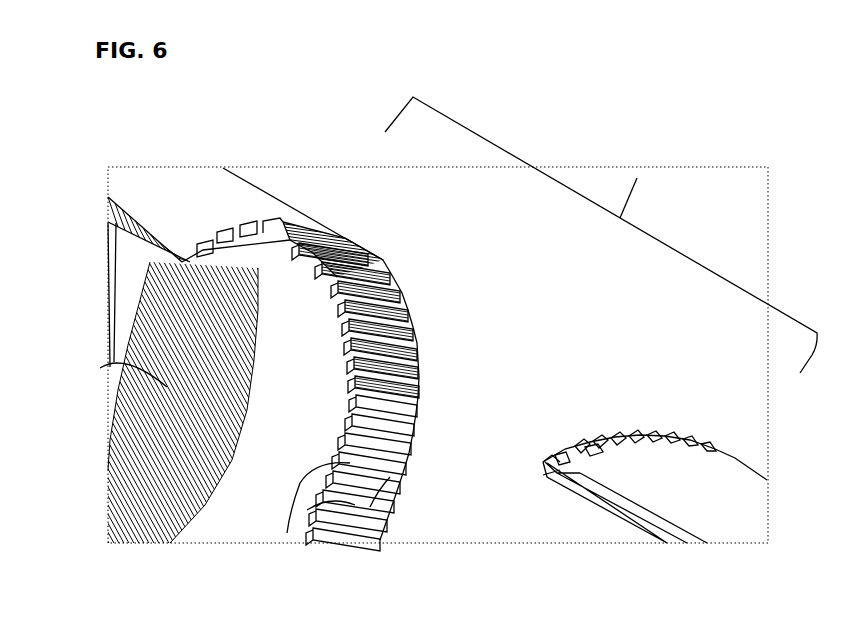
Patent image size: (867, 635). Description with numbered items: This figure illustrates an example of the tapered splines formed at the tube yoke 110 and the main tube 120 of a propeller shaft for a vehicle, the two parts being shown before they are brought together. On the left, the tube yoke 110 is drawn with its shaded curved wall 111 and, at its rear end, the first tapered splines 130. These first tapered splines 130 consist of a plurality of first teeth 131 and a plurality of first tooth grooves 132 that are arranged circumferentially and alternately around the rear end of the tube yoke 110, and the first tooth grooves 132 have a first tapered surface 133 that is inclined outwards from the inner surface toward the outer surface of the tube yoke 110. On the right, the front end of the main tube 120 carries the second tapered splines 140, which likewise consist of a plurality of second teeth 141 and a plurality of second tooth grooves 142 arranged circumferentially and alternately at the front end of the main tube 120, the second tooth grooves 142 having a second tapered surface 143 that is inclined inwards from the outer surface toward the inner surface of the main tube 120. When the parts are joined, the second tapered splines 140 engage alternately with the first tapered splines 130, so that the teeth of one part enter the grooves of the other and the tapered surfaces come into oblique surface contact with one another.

The tube yoke 110 is at (182, 210).
The housing curved wall 111 is at (162, 386).
The main tube 120 is at (705, 487).
The first tapered splines 130 is at (359, 246).
The first teeth 131 is at (287, 533).
The first tooth grooves 132 is at (307, 510).
The first tapered surface 133 is at (370, 507).
The second tapered splines 140 is at (697, 436).
The second teeth 141 is at (577, 447).
The second tooth grooves 142 is at (600, 443).
The second tapered surface 143 is at (560, 462).